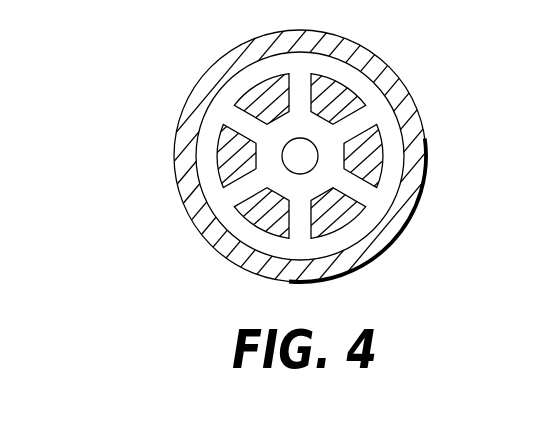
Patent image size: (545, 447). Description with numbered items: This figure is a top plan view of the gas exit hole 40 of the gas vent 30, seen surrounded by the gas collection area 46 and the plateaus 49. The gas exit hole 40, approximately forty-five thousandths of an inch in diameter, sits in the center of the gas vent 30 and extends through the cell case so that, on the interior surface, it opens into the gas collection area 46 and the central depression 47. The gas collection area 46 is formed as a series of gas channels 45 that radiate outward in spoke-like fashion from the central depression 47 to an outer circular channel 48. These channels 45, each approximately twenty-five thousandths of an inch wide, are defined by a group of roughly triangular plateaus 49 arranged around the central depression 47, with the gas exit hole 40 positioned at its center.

The gas vent 30 is at (159, 153).
The gas exit hole 40 is at (300, 150).
The gas channels 45 is at (358, 118).
The gas collection area 46 is at (281, 245).
The central depression 47 is at (267, 153).
The outer circular channel 48 is at (262, 75).
The plateaus 49 is at (252, 212).